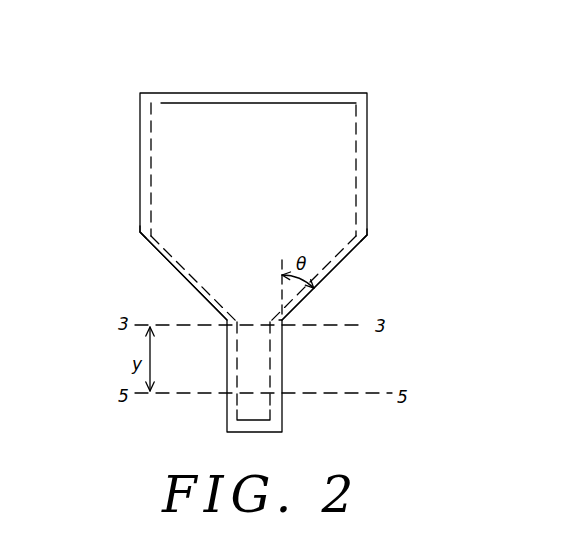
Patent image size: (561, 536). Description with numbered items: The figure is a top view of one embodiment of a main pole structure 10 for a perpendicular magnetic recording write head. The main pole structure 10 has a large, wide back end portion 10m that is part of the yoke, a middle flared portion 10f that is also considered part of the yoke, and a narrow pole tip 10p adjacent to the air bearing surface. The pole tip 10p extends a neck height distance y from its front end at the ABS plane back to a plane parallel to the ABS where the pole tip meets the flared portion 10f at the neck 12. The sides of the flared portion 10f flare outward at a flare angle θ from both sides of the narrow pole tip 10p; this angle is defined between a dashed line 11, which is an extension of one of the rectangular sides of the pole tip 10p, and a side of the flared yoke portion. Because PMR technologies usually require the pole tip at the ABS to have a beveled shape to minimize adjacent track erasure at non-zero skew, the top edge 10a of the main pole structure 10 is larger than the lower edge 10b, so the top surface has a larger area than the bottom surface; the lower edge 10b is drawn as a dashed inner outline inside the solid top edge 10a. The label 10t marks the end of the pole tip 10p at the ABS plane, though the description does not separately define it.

The main pole structure 10 is at (388, 97).
The back end portion 10m is at (340, 140).
The lower edge 10b is at (157, 247).
The flared portion 10f is at (223, 248).
The top edge 10a is at (207, 300).
The pole tip 10p is at (248, 358).
The tip portion 10t is at (282, 393).
The dashed line 11 is at (281, 278).
The neck 12 is at (283, 320).